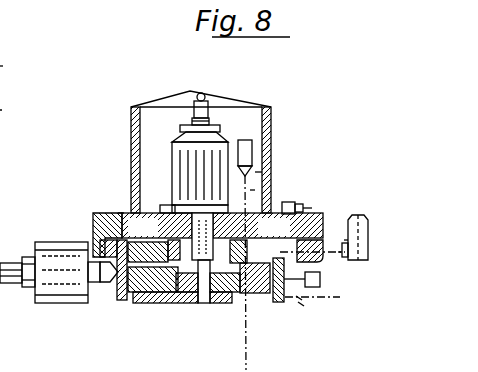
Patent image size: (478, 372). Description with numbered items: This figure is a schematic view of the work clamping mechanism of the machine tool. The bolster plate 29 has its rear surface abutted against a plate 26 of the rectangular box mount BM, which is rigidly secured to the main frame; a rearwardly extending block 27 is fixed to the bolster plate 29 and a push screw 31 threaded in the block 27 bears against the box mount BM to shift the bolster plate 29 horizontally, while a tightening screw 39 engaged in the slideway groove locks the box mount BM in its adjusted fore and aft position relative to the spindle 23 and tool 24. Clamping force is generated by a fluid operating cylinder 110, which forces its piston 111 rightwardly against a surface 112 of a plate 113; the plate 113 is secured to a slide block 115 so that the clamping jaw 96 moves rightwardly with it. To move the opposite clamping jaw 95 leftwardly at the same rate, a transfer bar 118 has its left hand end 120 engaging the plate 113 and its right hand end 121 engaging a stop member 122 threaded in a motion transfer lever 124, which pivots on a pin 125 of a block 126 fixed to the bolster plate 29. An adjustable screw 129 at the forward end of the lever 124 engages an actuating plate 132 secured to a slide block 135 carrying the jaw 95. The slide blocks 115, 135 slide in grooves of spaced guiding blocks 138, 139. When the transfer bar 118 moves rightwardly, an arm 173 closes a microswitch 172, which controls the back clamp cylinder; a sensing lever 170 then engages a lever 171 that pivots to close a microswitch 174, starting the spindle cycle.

The spindle 23 is at (0, 68).
The fragment 24 is at (0, 109).
The tightening screw 39 is at (198, 93).
The microswitch 174 is at (243, 142).
The box mount BM is at (268, 128).
The sensing lever 170 is at (258, 172).
The plate 26 is at (253, 190).
The microswitch 172 is at (355, 215).
The block 27 is at (296, 202).
The push screw 31 is at (307, 204).
The bolster plate 29 is at (322, 202).
The plate 113 is at (122, 215).
The transfer bar 118 is at (168, 204).
The left hand end 120 is at (97, 240).
The guiding block 138 is at (160, 238).
The guiding block 139 is at (255, 237).
The arm 173 is at (345, 240).
The stop member 122 is at (342, 250).
The block 126 is at (317, 258).
The pin 125 is at (314, 280).
The fluid operating cylinder 110 is at (58, 287).
The piston 111 is at (112, 290).
The surface 112 is at (122, 283).
The lever 171 is at (240, 263).
The adjustable screw 129 is at (312, 290).
The slide block 115 is at (148, 297).
The clamping jaw 96 is at (192, 285).
The clamping jaw 95 is at (225, 297).
The slide block 135 is at (257, 297).
The right hand end 121 is at (276, 294).
The motion transfer lever 124 is at (300, 298).
The actuating plate 132 is at (302, 304).